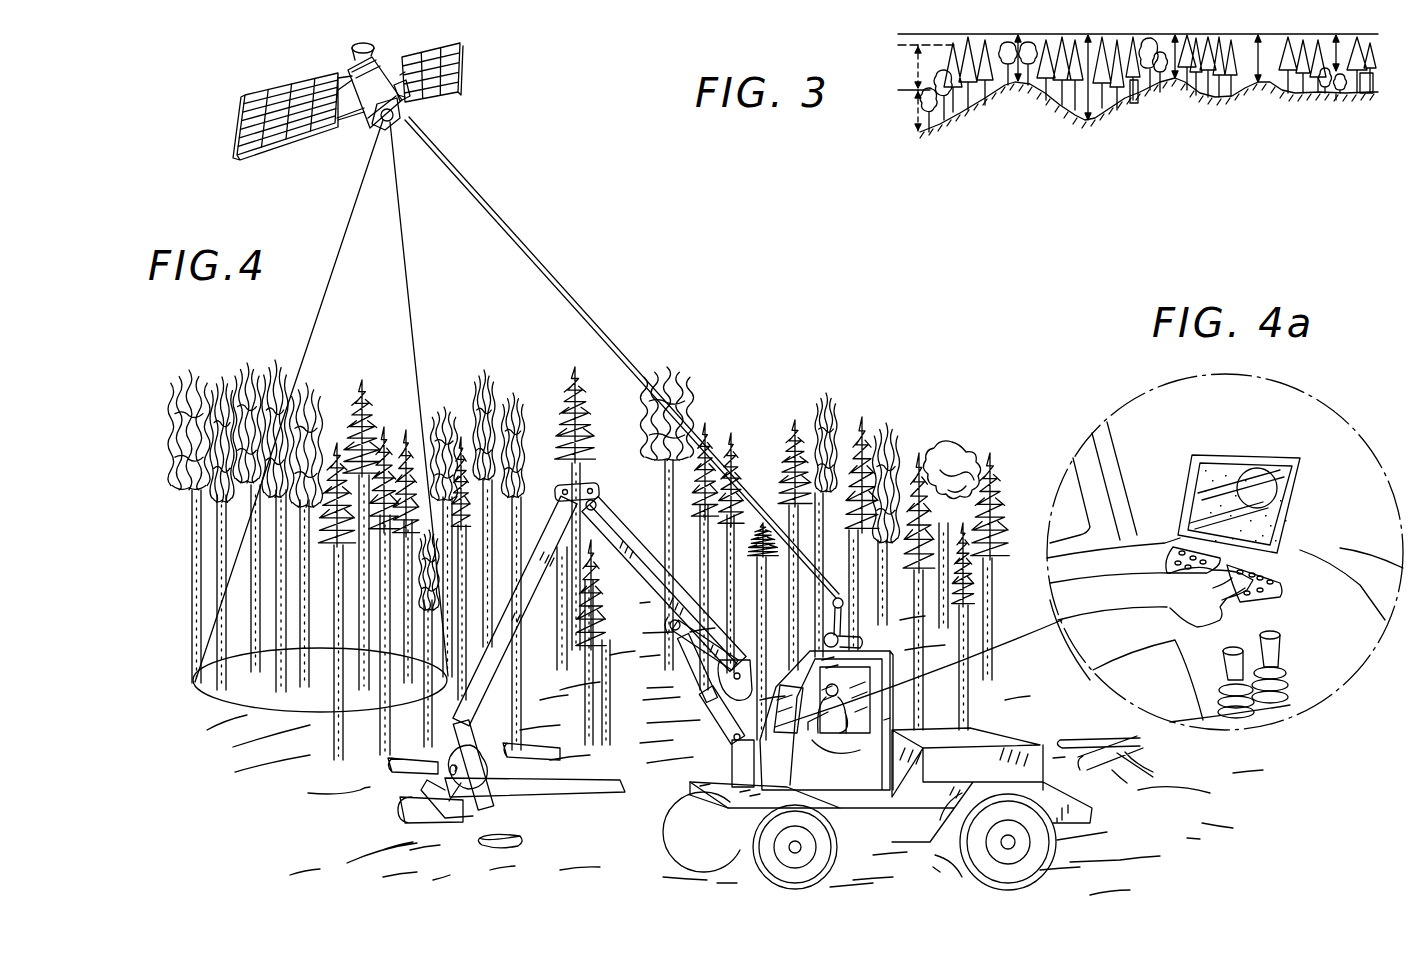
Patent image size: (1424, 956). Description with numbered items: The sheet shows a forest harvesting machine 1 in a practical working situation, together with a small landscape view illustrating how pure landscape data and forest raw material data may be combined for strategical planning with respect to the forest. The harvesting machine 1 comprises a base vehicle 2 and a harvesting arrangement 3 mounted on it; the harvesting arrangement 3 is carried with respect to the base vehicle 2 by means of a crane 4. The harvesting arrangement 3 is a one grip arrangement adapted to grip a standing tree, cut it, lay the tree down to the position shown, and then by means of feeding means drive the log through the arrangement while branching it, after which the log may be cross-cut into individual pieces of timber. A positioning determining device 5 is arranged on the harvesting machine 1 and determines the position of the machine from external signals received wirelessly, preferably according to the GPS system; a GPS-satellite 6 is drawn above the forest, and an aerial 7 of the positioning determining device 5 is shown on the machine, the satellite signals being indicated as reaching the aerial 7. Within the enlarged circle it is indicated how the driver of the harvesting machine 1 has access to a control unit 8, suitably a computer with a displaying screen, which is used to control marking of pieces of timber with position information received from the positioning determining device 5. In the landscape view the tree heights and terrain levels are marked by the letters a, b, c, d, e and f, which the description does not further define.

In FIG. 4, the harvesting machine 1 is at (455, 862).
In FIG. 4, the base vehicle 2 is at (967, 762).
In FIG. 4, the harvesting arrangement 3 is at (413, 788).
In FIG. 4, the crane 4 is at (617, 520).
In FIG. 4, the positioning determining device 5 is at (837, 575).
In FIG. 4, the GPS-satellite 6 is at (383, 122).
In FIG. 4, the aerial 7 is at (834, 602).
In FIG. 4A, the control unit 8 is at (1342, 456).
In FIG. 3, the ground elevation level a is at (926, 100).
In FIG. 3, the hill top b is at (1017, 74).
In FIG. 3, the valley bottom c is at (1087, 88).
In FIG. 3, the hill top d is at (1173, 72).
In FIG. 3, the ground level e is at (1256, 72).
In FIG. 3, the low vegetation height f is at (1335, 78).